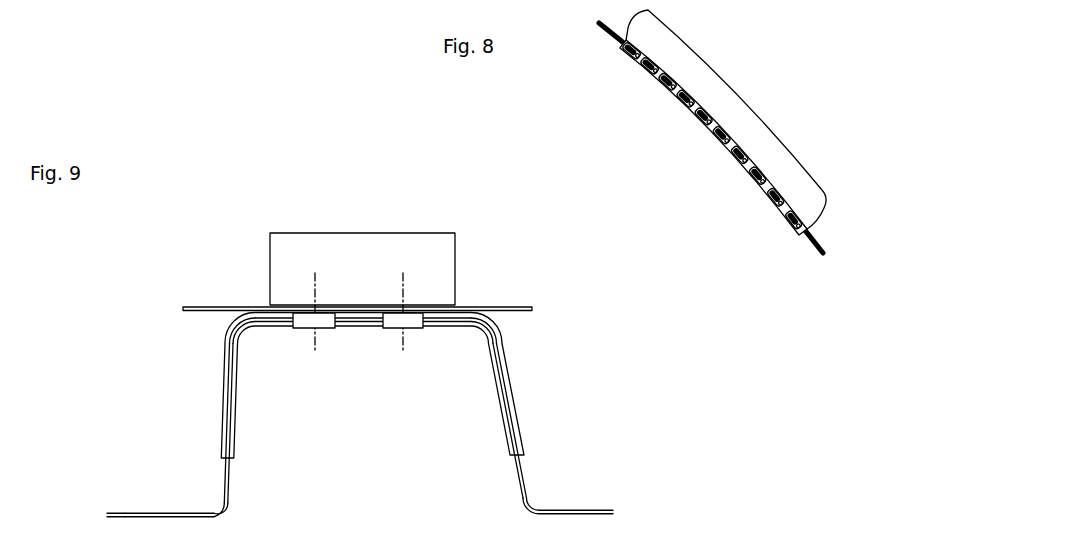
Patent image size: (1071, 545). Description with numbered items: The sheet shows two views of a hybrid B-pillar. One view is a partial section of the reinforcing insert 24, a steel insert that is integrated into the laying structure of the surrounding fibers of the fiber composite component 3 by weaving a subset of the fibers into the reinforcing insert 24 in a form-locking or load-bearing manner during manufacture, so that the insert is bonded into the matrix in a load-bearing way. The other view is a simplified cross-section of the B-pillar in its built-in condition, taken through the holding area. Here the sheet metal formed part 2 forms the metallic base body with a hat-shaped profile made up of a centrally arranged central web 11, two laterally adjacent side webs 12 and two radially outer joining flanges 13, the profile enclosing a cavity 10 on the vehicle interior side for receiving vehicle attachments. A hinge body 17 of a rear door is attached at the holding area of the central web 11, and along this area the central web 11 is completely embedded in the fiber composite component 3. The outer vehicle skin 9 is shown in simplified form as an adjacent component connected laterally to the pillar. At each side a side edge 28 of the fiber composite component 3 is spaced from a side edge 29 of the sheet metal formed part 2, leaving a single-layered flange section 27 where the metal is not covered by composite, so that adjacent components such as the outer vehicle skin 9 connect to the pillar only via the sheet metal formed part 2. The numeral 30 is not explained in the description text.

In FIG. 9, the sheet metal formed part 2 is at (349, 415).
In FIG. 8, the fiber composite component 3 is at (762, 130).
In FIG. 9, the outer vehicle skin 9 is at (517, 307).
In FIG. 9, the cavity 10 is at (349, 367).
In FIG. 9, the central web 11 is at (270, 328).
In FIG. 9, the side webs 12 is at (515, 430).
In FIG. 9, the joining flanges 13 is at (550, 505).
In FIG. 9, the hinge body 17 is at (455, 260).
In FIG. 8, the reinforcing insert 24 is at (820, 233).
In FIG. 9, the single-layered flange section 27 is at (152, 513).
In FIG. 9, the side edge of the fiber composite component 28 is at (217, 460).
In FIG. 9, the side edge of the sheet metal formed part 29 is at (103, 513).
In FIG. 9, the fastening element 30 is at (317, 337).